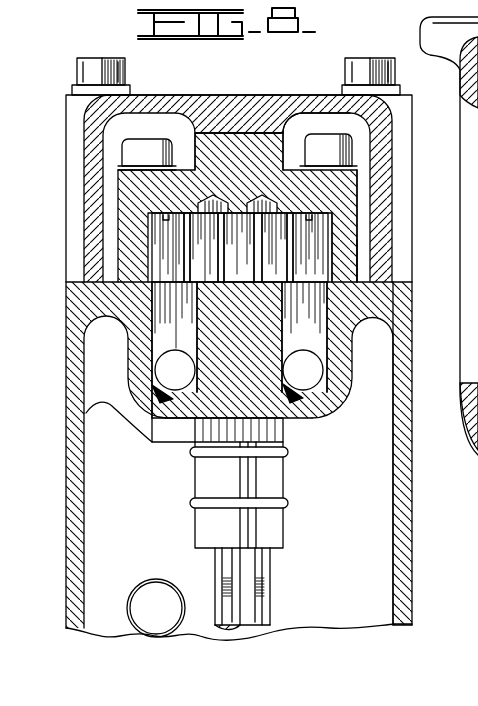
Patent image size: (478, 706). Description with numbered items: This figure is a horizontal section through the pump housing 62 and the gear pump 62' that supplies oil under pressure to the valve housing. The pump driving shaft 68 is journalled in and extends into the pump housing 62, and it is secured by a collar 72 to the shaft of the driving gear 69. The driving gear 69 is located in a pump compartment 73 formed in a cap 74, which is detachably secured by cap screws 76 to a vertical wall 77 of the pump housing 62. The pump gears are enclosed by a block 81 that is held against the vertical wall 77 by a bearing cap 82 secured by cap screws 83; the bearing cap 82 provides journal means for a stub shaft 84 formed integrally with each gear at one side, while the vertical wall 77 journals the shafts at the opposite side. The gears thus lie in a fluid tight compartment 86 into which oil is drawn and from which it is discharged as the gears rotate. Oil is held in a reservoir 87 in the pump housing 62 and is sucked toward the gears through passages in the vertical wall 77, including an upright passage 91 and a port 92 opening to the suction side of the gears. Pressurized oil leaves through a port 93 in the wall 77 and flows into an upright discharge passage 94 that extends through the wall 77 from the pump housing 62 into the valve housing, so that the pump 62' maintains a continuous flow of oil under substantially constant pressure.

The pump housing 62 is at (266, 361).
The pump 62' is at (389, 226).
The pump driving shaft 68 is at (272, 603).
The driving gear 69 is at (178, 212).
The collar 72 is at (198, 527).
The pump compartment 73 is at (367, 208).
The cap 74 is at (438, 150).
The cap screws 76 is at (88, 62).
The vertical wall 77 is at (393, 300).
The block 81 is at (347, 258).
The bearing cap 82 is at (285, 138).
The cap screws 83 is at (127, 140).
The stub shaft 84 is at (222, 133).
The fluid tight compartment 86 is at (142, 238).
The reservoir 87 is at (383, 488).
The upright passage 91 is at (158, 388).
The port 92 is at (153, 337).
The port 93 is at (317, 330).
The upright discharge passage 94 is at (320, 372).